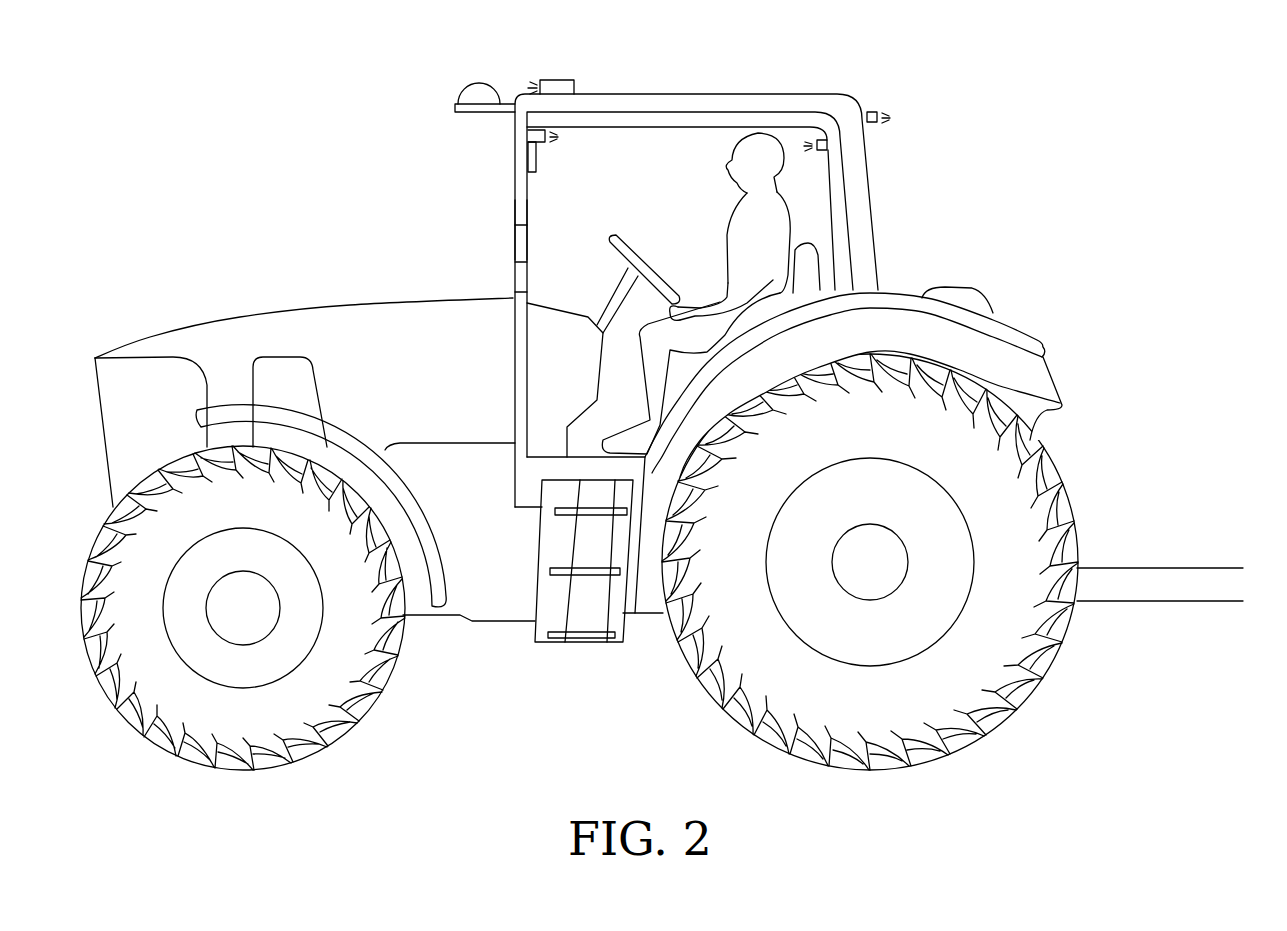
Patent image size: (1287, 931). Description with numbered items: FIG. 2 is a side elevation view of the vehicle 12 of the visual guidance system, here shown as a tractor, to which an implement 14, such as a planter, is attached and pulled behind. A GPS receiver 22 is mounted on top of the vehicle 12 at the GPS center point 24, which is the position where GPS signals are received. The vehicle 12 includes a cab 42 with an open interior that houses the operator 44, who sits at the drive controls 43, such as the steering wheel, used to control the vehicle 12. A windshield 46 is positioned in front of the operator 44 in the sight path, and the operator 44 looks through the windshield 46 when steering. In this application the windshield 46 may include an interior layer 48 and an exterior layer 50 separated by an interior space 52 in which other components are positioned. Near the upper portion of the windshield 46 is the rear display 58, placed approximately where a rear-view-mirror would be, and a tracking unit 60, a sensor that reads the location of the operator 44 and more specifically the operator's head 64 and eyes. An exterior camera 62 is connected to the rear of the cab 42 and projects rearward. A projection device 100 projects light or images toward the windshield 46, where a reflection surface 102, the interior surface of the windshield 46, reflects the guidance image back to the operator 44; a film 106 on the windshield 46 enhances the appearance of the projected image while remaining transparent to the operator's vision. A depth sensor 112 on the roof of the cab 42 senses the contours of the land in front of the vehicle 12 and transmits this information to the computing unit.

The vehicle 12 is at (243, 310).
The implement 14 is at (1165, 568).
The GPS receiver 22 is at (455, 104).
The GPS center point 24 is at (477, 82).
The cab 42 is at (892, 195).
The drive controls 43 is at (642, 252).
The operator 44 is at (696, 293).
The windshield 46 is at (530, 224).
The interior layer 48 is at (454, 220).
The exterior layer 50 is at (518, 266).
The interior space 52 is at (520, 292).
The rear display 58 is at (538, 157).
The tracking unit 60 is at (530, 136).
The exterior camera 62 is at (878, 112).
The operator's head 64 is at (742, 140).
The projection device 100 is at (820, 140).
The reflection surface 102 is at (518, 232).
The film 106 is at (454, 220).
The depth sensor 112 is at (560, 80).